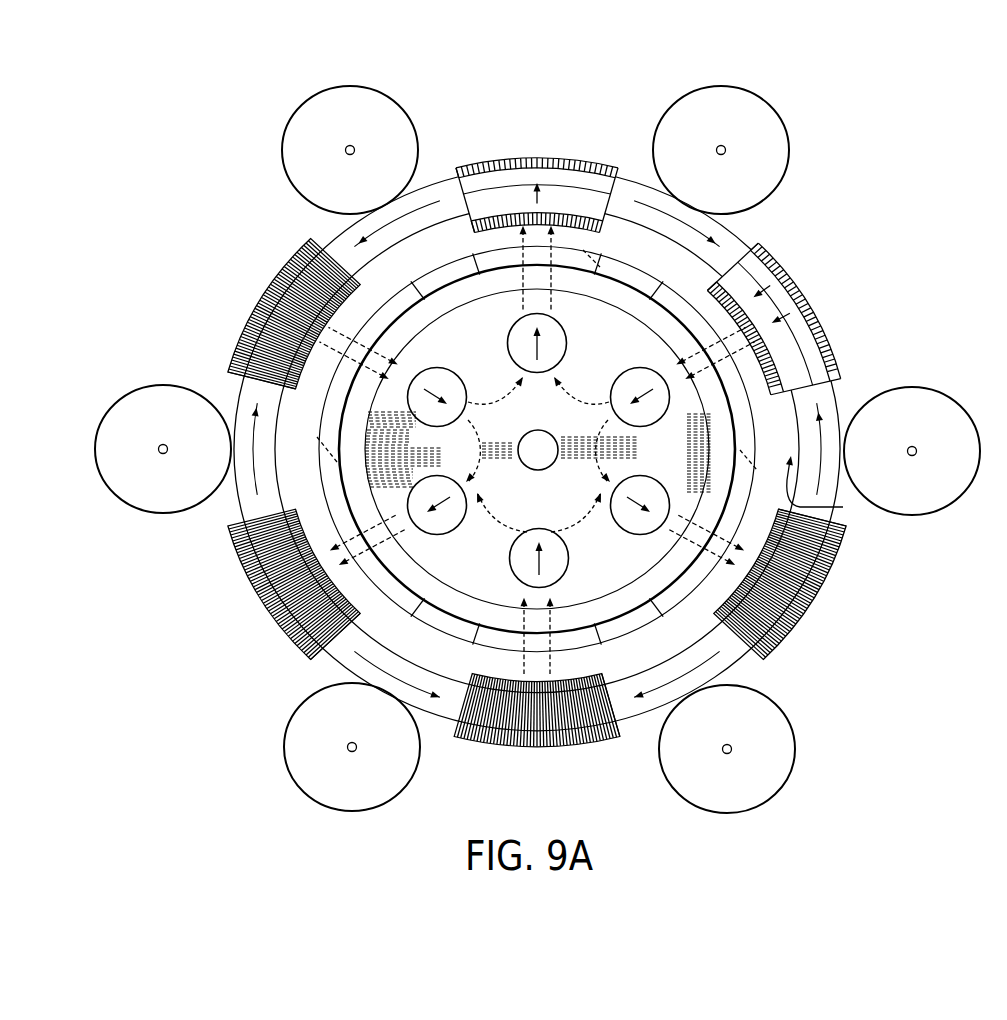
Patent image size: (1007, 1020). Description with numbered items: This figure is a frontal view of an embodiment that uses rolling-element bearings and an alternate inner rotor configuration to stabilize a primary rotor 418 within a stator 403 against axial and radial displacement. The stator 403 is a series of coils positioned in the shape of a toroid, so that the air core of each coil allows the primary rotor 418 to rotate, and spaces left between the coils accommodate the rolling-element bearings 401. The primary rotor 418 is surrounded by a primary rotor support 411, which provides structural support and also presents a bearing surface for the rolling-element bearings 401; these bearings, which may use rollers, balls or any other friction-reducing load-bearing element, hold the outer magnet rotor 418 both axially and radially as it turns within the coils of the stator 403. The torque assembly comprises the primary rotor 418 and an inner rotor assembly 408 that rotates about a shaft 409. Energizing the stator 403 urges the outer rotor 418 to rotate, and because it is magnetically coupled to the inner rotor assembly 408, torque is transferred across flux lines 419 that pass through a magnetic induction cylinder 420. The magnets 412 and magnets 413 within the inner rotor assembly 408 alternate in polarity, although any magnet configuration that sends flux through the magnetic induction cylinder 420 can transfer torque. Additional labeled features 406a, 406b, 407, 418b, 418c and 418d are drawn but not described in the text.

The rolling-element bearings 401 is at (165, 506).
The stator 403 is at (823, 580).
The slot 406a is at (643, 597).
The slot 406b is at (433, 298).
The ring 407 is at (630, 275).
The inner rotor assembly 408 is at (558, 428).
The shaft 409 is at (477, 447).
The primary rotor support 411 is at (345, 240).
The magnets 412 is at (566, 342).
The magnets 413 is at (618, 455).
The primary rotor 418 is at (843, 507).
The coil segment 418b is at (570, 183).
The coil segment 418c is at (727, 253).
The coil segment 418d is at (788, 287).
The flux lines 419 is at (790, 348).
The magnetic induction cylinder 420 is at (747, 660).